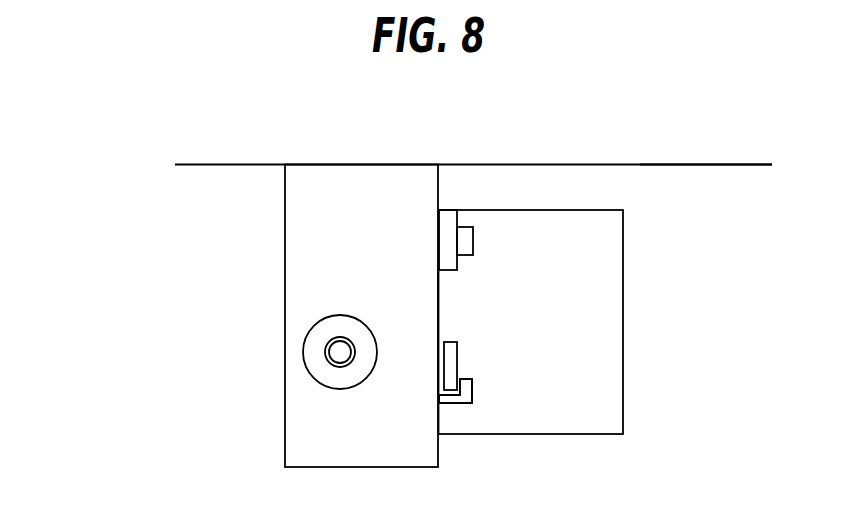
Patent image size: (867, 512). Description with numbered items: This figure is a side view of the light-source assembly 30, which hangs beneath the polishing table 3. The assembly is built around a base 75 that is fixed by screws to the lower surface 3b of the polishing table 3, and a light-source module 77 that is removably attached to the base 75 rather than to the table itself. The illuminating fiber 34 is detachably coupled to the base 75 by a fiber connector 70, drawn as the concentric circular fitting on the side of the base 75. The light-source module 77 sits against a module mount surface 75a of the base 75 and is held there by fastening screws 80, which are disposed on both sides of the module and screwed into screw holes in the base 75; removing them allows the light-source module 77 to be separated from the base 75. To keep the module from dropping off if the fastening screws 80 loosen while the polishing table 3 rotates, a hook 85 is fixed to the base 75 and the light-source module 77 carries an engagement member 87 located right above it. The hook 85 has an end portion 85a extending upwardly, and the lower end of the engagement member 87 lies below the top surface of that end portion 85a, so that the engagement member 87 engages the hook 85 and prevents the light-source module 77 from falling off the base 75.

The polishing table 3 is at (451, 130).
The lower surface 3b is at (655, 165).
The light-source assembly 30 is at (176, 280).
The base 75 is at (285, 240).
The module mount surface 75a is at (437, 300).
The light-source module 77 is at (623, 315).
The fastening screws 80 is at (473, 240).
The fiber connector 70 is at (303, 338).
The illuminating fiber 34 is at (328, 358).
The engagement member 87 is at (457, 352).
The end portion 85a is at (472, 383).
The hook 85 is at (452, 403).